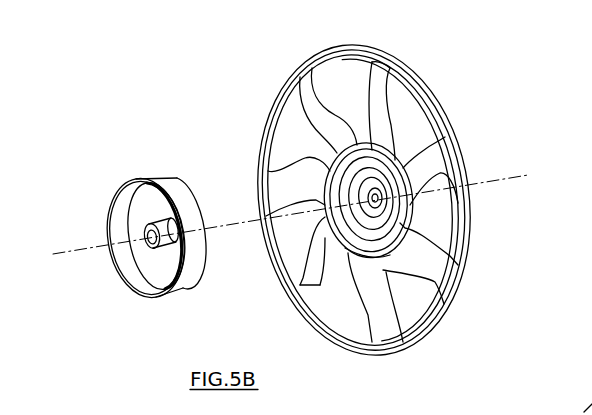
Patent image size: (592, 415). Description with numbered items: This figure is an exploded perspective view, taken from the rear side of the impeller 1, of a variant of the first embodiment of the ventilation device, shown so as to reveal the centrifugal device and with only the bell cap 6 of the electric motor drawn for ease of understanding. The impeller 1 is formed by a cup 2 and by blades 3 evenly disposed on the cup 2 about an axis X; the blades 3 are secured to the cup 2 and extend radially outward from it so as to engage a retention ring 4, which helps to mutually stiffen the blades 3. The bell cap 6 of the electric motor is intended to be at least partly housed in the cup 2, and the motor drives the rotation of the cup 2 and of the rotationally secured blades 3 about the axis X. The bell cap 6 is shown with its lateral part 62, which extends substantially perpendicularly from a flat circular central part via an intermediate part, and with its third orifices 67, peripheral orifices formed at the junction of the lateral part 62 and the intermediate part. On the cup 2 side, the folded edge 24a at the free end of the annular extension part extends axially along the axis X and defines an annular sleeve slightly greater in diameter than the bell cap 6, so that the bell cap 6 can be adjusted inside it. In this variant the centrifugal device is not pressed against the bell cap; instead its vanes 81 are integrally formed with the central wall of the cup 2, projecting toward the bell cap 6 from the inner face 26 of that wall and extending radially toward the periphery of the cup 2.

The impeller 1 is at (478, 89).
The cup 2 is at (318, 235).
The blades 3 is at (375, 95).
The retention ring 4 is at (473, 238).
The bell cap 6 is at (114, 263).
The inner face 26 is at (356, 238).
The folded edge 24a is at (372, 252).
The lateral part 62 is at (591, 378).
The third orifices 67 is at (133, 252).
The vanes 81 is at (351, 240).
The axis X is at (504, 177).